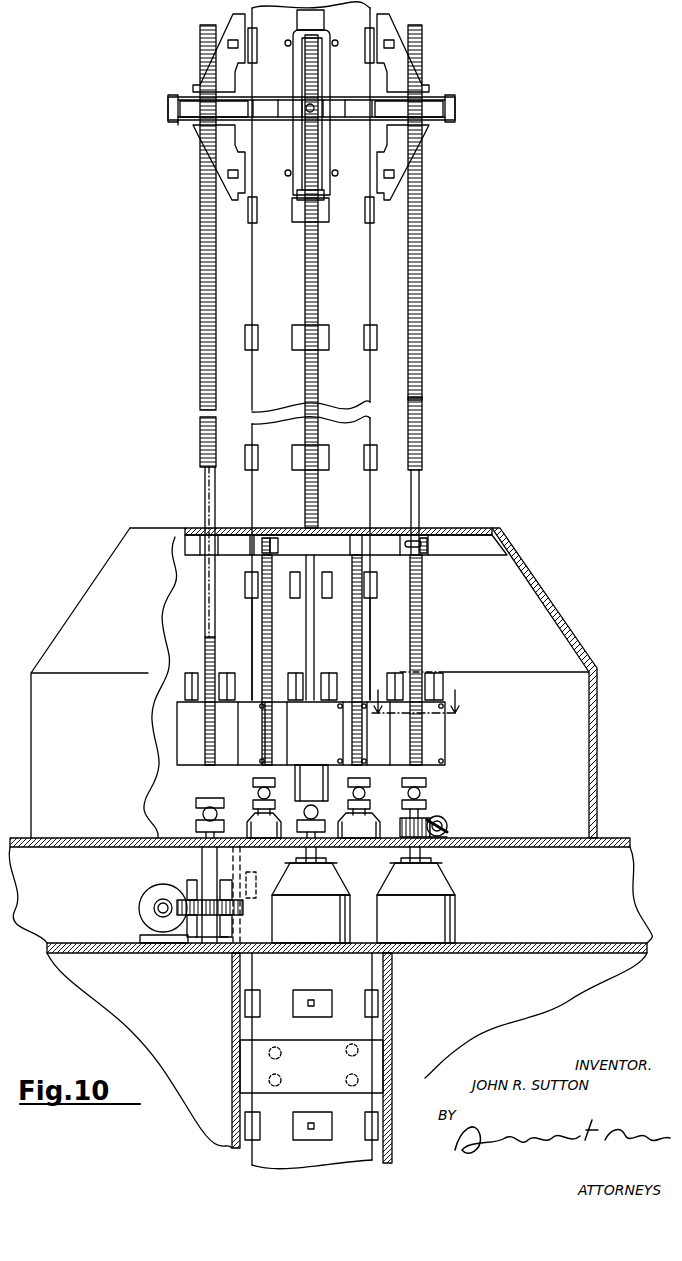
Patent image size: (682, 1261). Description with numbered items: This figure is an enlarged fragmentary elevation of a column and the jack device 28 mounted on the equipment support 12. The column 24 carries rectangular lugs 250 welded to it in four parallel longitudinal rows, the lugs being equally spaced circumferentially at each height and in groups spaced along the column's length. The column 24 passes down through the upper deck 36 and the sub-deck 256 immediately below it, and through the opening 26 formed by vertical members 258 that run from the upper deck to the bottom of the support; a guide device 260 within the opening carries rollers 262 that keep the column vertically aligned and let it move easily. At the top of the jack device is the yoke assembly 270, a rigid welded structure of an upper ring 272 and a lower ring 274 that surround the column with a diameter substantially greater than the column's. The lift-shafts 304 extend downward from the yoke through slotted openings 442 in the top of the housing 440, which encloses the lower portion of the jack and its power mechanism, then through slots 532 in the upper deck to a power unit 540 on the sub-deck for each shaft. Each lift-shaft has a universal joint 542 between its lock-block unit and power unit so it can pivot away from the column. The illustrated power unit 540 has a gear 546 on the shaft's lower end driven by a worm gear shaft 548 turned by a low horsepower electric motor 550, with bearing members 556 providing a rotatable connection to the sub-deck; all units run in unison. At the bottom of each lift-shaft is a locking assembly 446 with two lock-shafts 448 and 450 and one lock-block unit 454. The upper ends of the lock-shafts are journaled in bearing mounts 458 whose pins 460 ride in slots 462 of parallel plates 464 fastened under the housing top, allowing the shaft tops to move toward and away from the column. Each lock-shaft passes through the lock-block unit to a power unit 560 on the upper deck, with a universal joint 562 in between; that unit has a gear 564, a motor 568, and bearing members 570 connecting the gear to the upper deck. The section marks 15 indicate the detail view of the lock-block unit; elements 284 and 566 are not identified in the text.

The equipment support 12 is at (522, 1000).
The section line 15 is at (419, 694).
The column 24 is at (292, 293).
The opening 26 is at (236, 976).
The jack device 28 is at (488, 528).
The upper deck 36 is at (608, 838).
The lugs 250 is at (245, 328).
The sub-deck 256 is at (545, 943).
The members 258 is at (232, 1004).
The guide device 260 is at (240, 1060).
The rollers 262 is at (346, 1052).
The yoke assembly 270 is at (447, 99).
The upper ring 272 is at (178, 97).
The lower ring 274 is at (178, 122).
The brackets 284 is at (238, 28).
The lift-shafts 304 is at (200, 262).
The housing 440 is at (580, 640).
The slotted openings 442 is at (185, 548).
The locking assembly 446 is at (176, 698).
The lock-shaft 448 is at (262, 650).
The lock-shaft 450 is at (205, 650).
The lock-block unit 454 is at (224, 735).
The bearing mounts 458 is at (274, 553).
The pins 460 is at (250, 555).
The slots 462 is at (424, 535).
The plates 464 is at (262, 538).
The slots 532 is at (202, 850).
The power unit 540 is at (130, 911).
The universal joint 542 is at (200, 802).
The gear 546 is at (202, 952).
The worm gear shaft 548 is at (150, 903).
The electric motor 550 is at (160, 886).
The bearing members 556 is at (232, 885).
The power unit 560 is at (452, 792).
The universal joint 562 is at (253, 785).
The gear 564 is at (447, 834).
The wheel 566 is at (447, 823).
The electric motor 568 is at (445, 812).
The bearing members 570 is at (400, 828).